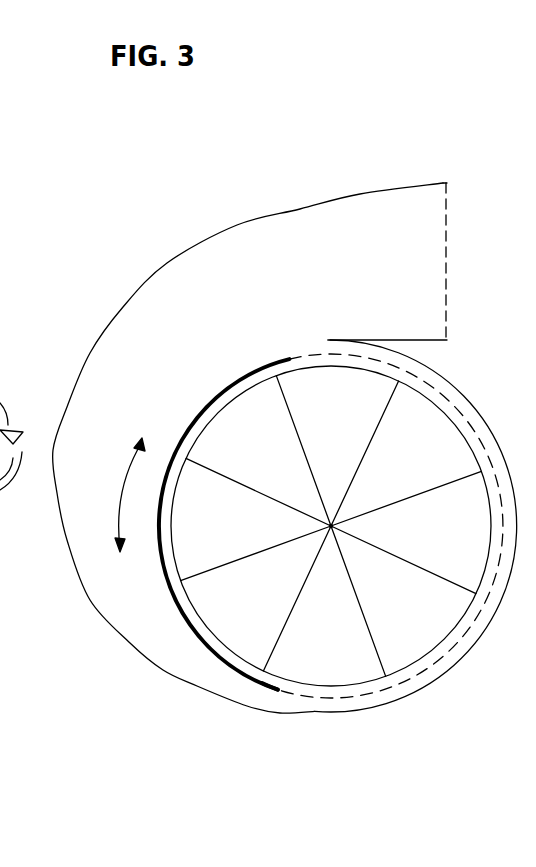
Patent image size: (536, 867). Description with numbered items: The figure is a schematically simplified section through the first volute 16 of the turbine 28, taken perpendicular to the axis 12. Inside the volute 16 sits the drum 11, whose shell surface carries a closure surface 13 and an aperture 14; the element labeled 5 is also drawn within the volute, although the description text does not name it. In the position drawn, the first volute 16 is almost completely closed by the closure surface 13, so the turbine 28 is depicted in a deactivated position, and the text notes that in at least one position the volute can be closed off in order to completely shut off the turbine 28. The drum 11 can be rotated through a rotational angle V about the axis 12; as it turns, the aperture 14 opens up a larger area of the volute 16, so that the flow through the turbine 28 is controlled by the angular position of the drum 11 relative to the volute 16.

The fan wheel 5 is at (417, 567).
The drum 11 is at (262, 685).
The axis 12 is at (331, 526).
The closure surface 13 is at (207, 650).
The aperture 14 is at (398, 687).
The first volute 16 is at (237, 238).
The turbine 28 is at (494, 256).
The rotational angle V is at (120, 505).